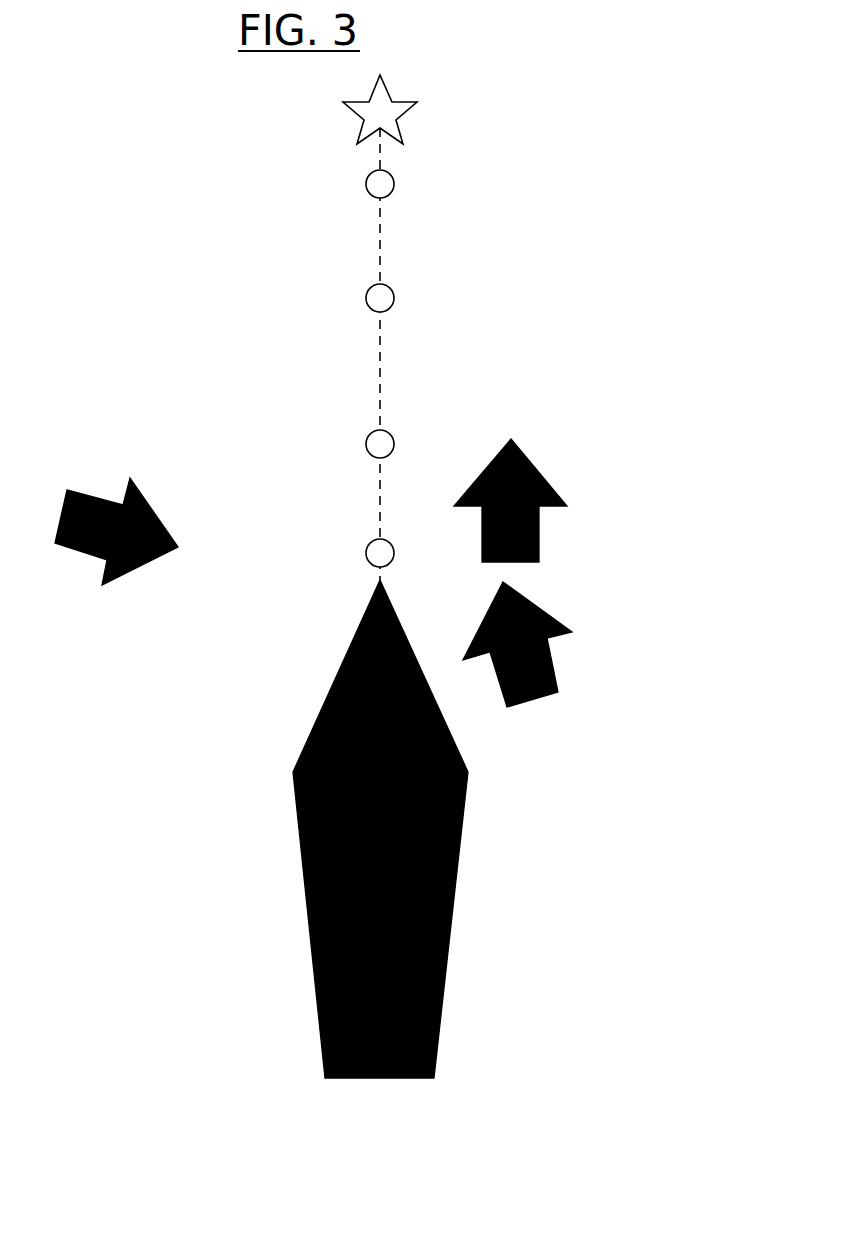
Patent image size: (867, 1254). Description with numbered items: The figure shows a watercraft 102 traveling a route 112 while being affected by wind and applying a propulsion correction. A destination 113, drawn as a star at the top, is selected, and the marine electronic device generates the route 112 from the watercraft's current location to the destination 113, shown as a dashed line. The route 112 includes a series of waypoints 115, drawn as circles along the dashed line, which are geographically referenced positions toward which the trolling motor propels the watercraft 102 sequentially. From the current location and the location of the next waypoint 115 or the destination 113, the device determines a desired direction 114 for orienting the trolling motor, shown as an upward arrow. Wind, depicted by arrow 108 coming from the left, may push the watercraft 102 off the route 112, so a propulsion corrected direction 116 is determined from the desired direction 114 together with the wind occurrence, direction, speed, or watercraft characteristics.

The watercraft 102 is at (353, 829).
The wind 108 is at (100, 527).
The route 112 is at (347, 354).
The destination 113 is at (348, 109).
The desired direction 114 is at (604, 485).
The waypoint 115 is at (343, 310).
The propulsion corrected direction 116 is at (613, 673).